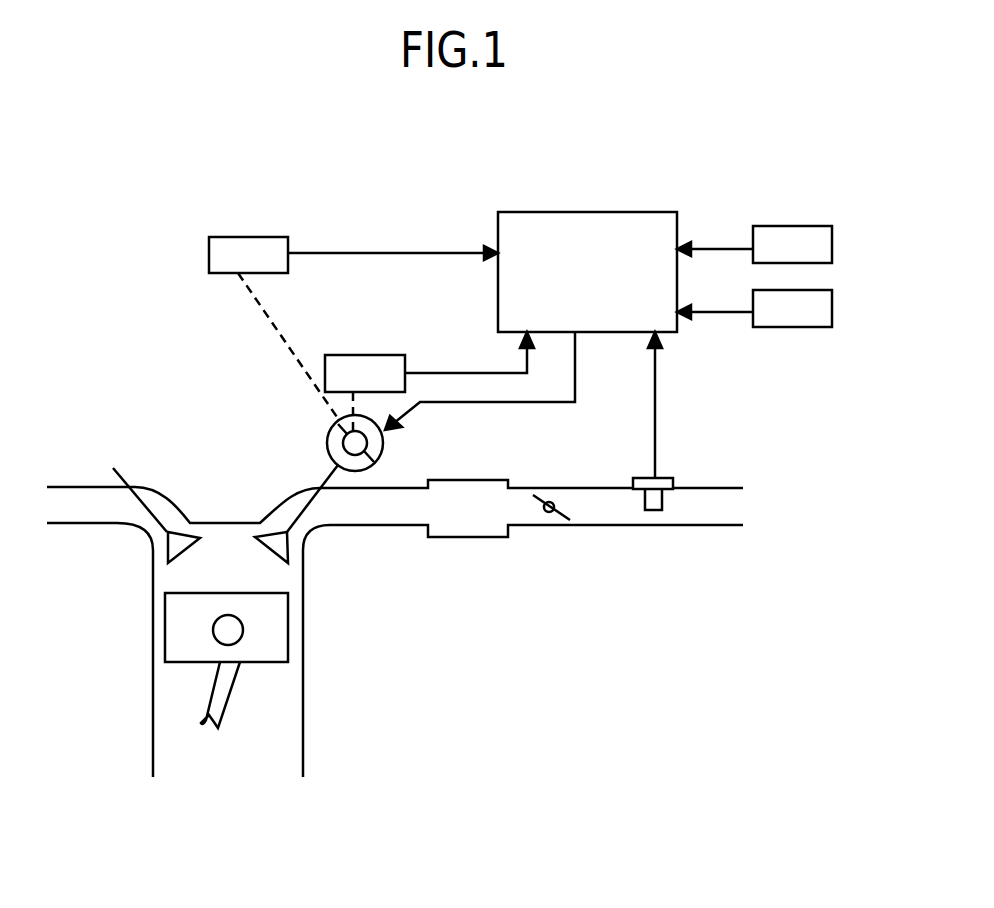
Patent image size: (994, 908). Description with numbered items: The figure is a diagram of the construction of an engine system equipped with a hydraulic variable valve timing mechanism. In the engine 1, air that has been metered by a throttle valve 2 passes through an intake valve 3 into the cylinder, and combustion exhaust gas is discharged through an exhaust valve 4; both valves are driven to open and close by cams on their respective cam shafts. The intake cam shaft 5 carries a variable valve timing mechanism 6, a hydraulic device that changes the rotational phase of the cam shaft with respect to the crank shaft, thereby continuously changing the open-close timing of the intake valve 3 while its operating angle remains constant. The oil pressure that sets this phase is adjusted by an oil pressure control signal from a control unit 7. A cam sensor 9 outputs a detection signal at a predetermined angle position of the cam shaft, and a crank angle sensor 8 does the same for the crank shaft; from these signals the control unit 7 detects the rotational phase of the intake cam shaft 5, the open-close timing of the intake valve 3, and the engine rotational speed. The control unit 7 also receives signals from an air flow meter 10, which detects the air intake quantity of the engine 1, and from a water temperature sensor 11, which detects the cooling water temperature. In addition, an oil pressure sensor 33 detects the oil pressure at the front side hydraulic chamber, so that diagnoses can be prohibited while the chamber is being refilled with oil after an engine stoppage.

The engine 1 is at (320, 718).
The throttle valve 2 is at (547, 500).
The intake valve 3 is at (303, 549).
The exhaust valve 4 is at (153, 549).
The intake cam shaft 5 is at (382, 452).
The variable valve timing mechanism 6 is at (327, 443).
The control unit 7 is at (645, 212).
The crank angle sensor 8 is at (832, 311).
The cam sensor 9 is at (209, 251).
The air flow meter 10 is at (666, 478).
The water temperature sensor 11 is at (832, 246).
The oil pressure sensor 33 is at (370, 355).